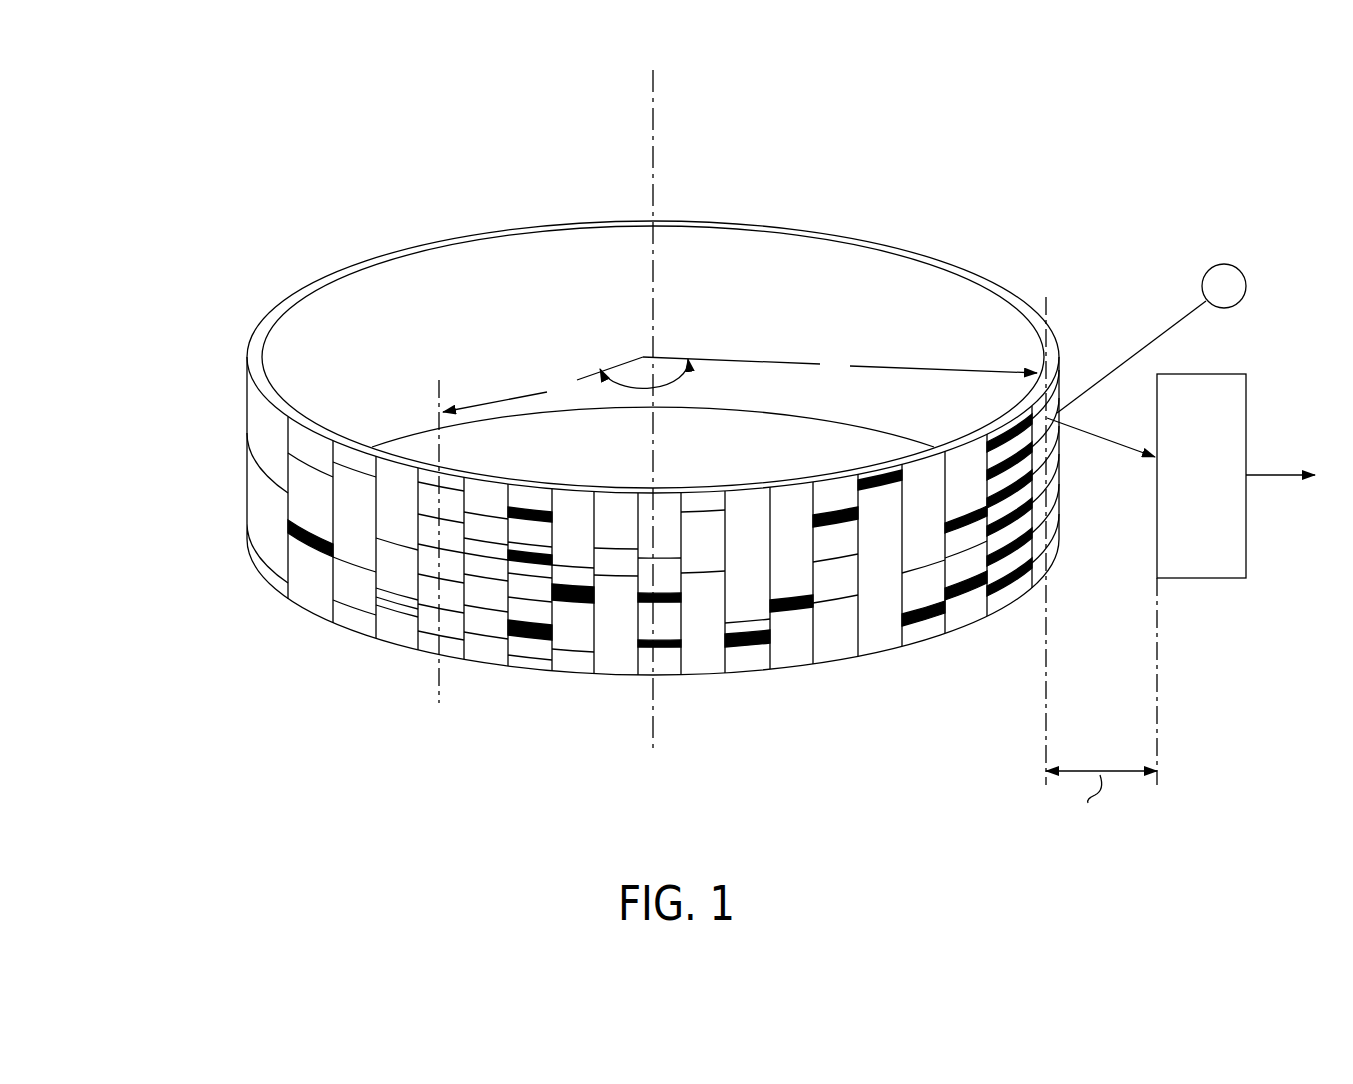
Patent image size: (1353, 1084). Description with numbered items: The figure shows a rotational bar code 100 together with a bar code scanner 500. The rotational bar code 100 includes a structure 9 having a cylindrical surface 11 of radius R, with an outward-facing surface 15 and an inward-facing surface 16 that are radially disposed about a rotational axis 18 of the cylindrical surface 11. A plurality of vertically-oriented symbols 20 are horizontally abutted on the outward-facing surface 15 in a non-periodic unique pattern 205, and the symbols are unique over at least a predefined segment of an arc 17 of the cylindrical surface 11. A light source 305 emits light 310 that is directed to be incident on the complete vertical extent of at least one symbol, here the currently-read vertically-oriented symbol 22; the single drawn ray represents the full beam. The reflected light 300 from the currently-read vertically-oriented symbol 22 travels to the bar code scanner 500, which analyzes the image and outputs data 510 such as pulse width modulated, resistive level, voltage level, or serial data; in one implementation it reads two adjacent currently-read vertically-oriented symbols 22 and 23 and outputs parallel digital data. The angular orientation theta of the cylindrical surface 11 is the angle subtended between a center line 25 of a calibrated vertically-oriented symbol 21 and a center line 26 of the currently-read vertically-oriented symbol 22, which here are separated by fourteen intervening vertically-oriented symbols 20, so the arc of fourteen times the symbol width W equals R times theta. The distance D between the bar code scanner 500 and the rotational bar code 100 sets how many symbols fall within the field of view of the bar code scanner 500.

The structure 9 is at (447, 240).
The cylindrical surface 11 is at (247, 505).
The outward-facing surface 15 is at (247, 418).
The inward-facing surface 16 is at (323, 313).
The arc 17 is at (433, 663).
The rotational axis 18 is at (653, 155).
The vertically-oriented symbol 20 is at (528, 682).
The calibrated vertically-oriented symbol 21 is at (452, 650).
The currently-read vertically-oriented symbol 22 is at (1060, 545).
The adjacent currently-read vertically-oriented symbol 23 is at (1010, 597).
The center line of calibrated vertically-oriented symbol 25 is at (438, 697).
The center line of currently-read vertically-oriented symbol 26 is at (1047, 728).
The rotational bar code 100 is at (253, 587).
The non-periodic unique pattern 205 is at (170, 450).
The reflected light 300 is at (1105, 445).
The light source 305 is at (1225, 264).
The emitted light 310 is at (1160, 335).
The bar code scanner 500 is at (1246, 414).
The output data 510 is at (1275, 480).